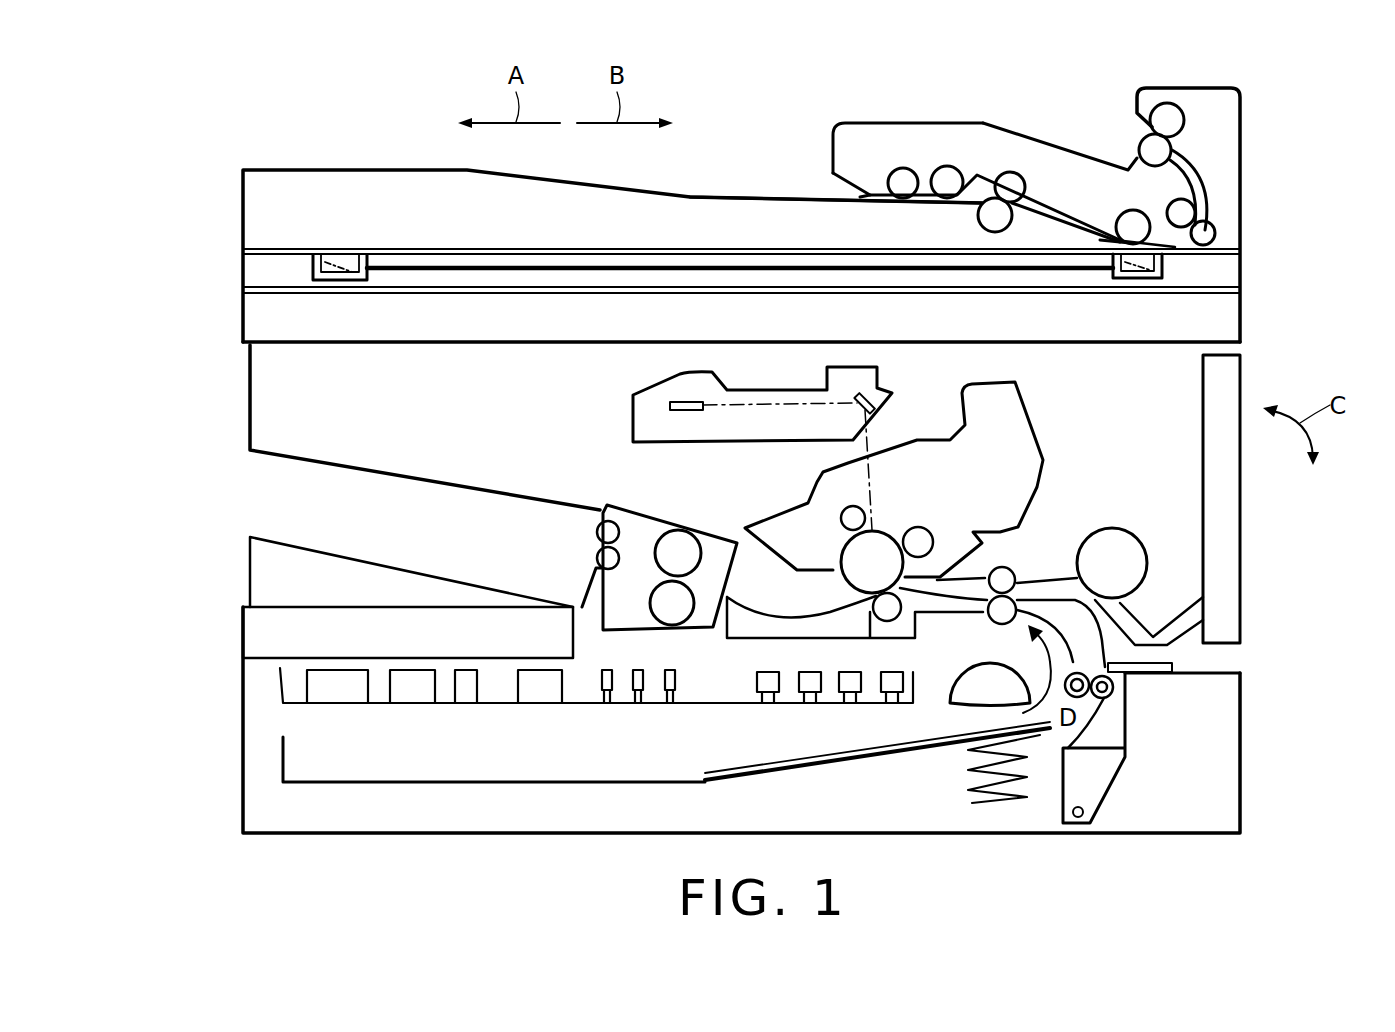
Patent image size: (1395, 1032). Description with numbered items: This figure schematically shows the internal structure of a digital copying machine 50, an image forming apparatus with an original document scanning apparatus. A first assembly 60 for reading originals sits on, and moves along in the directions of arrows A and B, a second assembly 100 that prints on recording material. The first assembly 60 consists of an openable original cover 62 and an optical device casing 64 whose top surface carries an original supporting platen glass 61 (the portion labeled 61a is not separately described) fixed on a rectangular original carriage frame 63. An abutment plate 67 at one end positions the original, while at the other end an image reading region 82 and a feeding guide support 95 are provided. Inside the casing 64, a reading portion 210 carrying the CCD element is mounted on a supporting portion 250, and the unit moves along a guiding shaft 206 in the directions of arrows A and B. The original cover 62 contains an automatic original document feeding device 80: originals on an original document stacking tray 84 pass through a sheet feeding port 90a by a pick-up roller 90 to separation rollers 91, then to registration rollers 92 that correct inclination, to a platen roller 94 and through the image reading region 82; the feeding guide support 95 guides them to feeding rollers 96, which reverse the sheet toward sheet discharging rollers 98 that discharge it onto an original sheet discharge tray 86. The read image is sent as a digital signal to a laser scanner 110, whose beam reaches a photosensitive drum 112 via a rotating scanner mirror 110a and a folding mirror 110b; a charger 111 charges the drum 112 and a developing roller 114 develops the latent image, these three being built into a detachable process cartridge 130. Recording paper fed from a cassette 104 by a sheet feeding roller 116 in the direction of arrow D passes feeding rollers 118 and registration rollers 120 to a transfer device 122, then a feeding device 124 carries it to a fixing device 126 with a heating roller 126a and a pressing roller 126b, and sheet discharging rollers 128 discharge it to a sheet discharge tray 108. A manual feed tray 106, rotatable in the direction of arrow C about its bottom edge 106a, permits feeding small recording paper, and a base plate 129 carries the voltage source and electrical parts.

The digital copying machine 50 is at (1260, 118).
The first assembly 60 is at (1322, 197).
The original supporting platen glass 61 is at (413, 247).
The carriage guide 61a is at (342, 247).
The original cover 62 is at (1248, 227).
The original carriage frame 63 is at (270, 247).
The optical device casing 64 is at (1248, 272).
The abutment plate 67 is at (300, 247).
The automatic original document feeding device 80 is at (1051, 124).
The image reading region 82 is at (1110, 236).
The original document stacking tray 84 is at (773, 196).
The original sheet discharge tray 86 is at (1092, 157).
The pick-up roller 90 is at (903, 183).
The sheet feeding port 90a is at (848, 195).
The separation rollers 91 is at (947, 182).
The registration rollers 92 is at (995, 215).
The platen roller 94 is at (1133, 227).
The feeding guide support 95 is at (1170, 248).
The feeding rollers 96 is at (1205, 232).
The sheet discharging rollers 98 is at (1155, 150).
The second assembly 100 is at (244, 400).
The cassette 104 is at (283, 752).
The manual feed tray 106 is at (1230, 495).
The bottom edge 106a is at (1223, 645).
The sheet discharge tray 108 is at (300, 542).
The laser scanner 110 is at (626, 418).
The scanner mirror 110a is at (670, 402).
The folding mirror 110b is at (873, 395).
The charger 111 is at (853, 518).
The photosensitive drum 112 is at (878, 548).
The developing roller 114 is at (920, 542).
The sheet feeding roller 116 is at (975, 675).
The feeding rollers 118 is at (1105, 700).
The registration rollers 120 is at (1004, 580).
The transfer device 122 is at (887, 607).
The feeding device 124 is at (750, 622).
The fixing device 126 is at (702, 535).
The heating roller 126a is at (678, 551).
The pressing roller 126b is at (672, 605).
The sheet discharging rollers 128 is at (606, 558).
The base plate 129 is at (377, 705).
The process cartridge 130 is at (1048, 417).
The guiding shaft 206 is at (690, 266).
The reading portion 210 is at (317, 265).
The supporting portion 250 is at (337, 273).